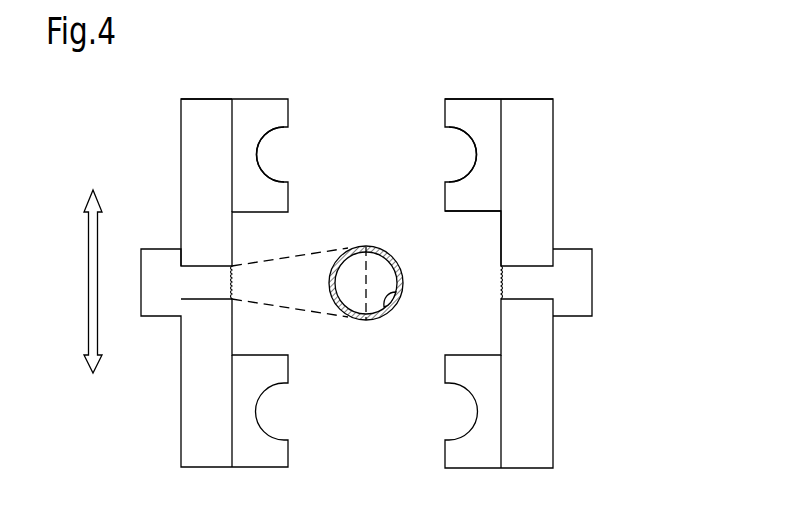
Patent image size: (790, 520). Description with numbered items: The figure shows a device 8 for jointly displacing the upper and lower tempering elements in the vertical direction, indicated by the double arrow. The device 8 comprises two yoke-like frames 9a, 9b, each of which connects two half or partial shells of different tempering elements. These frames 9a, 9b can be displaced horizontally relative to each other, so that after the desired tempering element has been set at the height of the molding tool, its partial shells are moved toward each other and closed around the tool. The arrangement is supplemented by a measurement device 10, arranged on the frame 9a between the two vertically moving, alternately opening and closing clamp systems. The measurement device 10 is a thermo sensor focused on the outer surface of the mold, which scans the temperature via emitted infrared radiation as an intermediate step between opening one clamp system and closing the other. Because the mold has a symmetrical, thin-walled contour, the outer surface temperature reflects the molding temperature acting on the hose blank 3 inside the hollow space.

The hose blank 3 is at (388, 309).
The device for jointly displacing the tempering elements 8 is at (63, 278).
The yoke-like frame 9a is at (208, 76).
The yoke-like frame 9b is at (527, 76).
The measurement device 10 is at (205, 288).